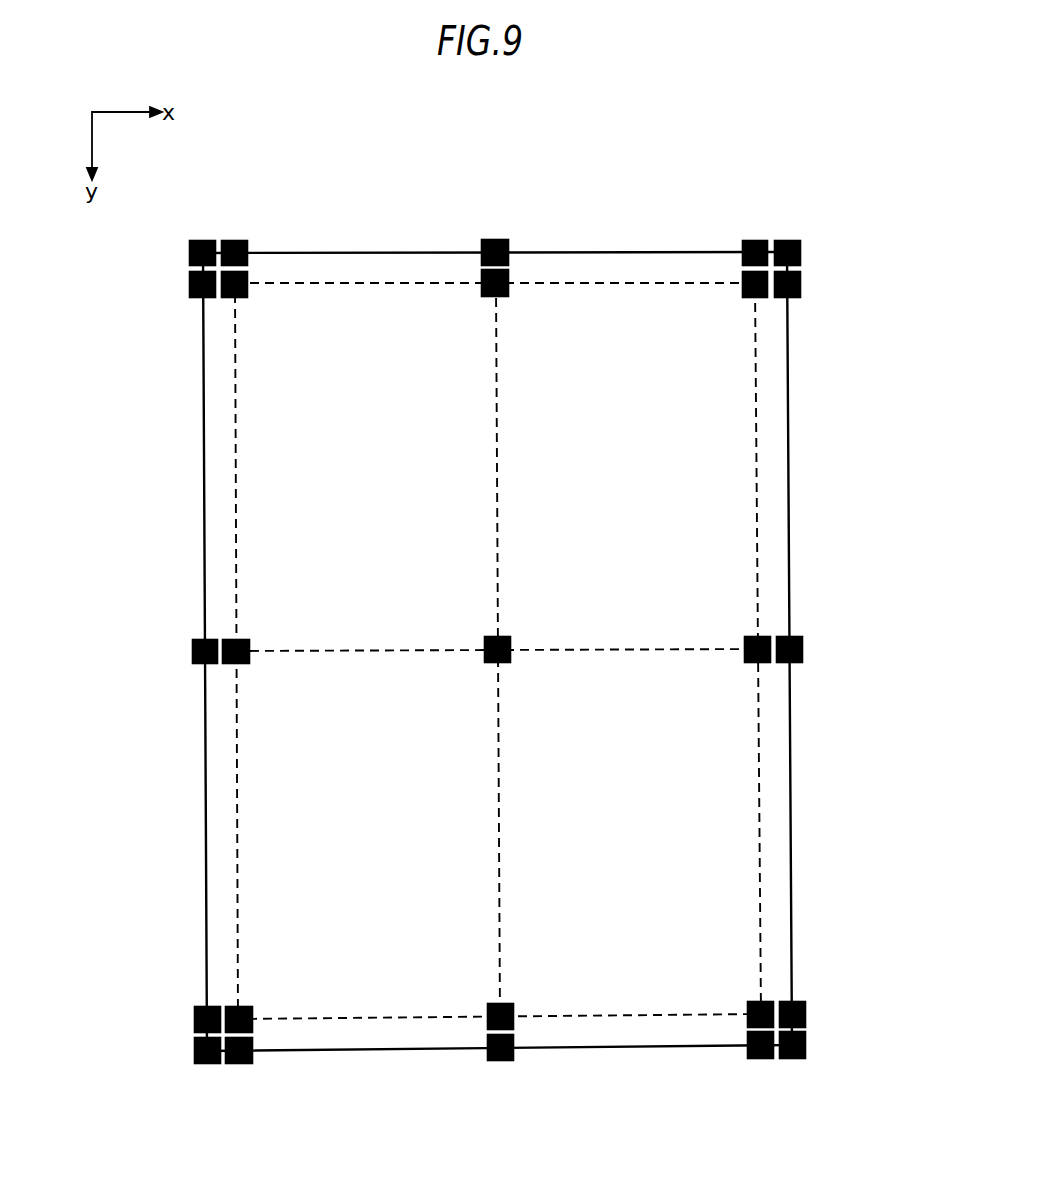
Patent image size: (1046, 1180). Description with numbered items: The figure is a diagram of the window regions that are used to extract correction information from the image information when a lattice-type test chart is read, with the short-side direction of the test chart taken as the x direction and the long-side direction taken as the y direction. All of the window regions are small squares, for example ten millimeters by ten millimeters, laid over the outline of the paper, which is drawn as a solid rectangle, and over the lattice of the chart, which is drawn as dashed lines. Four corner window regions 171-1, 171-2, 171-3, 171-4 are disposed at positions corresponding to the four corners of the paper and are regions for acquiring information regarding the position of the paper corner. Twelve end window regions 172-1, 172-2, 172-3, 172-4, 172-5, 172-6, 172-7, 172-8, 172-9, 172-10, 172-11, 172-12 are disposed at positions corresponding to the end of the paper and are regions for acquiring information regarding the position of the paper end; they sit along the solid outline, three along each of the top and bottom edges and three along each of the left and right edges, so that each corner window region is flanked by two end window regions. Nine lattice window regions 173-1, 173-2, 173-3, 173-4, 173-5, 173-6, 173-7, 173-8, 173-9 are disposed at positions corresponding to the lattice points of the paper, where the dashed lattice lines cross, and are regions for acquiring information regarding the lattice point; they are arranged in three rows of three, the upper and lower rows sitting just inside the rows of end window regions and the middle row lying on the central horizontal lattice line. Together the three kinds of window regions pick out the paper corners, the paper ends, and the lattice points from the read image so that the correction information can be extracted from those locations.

The window region 171-1 is at (200, 240).
The window region 171-2 is at (801, 250).
The window region 171-3 is at (198, 1063).
The window region 171-4 is at (797, 1058).
The window region 172-1 is at (240, 240).
The window region 172-2 is at (497, 239).
The window region 172-3 is at (750, 240).
The window region 172-4 is at (189, 287).
The window region 172-5 is at (801, 287).
The window region 172-6 is at (198, 640).
The window region 172-7 is at (803, 643).
The window region 172-8 is at (195, 1020).
The window region 172-9 is at (797, 1003).
The window region 172-10 is at (238, 1063).
The window region 172-11 is at (500, 1060).
The window region 172-12 is at (750, 1058).
The window region 173-1 is at (248, 296).
The window region 173-2 is at (509, 294).
The window region 173-3 is at (743, 293).
The window region 173-4 is at (243, 640).
The window region 173-5 is at (503, 637).
The window region 173-6 is at (745, 640).
The window region 173-7 is at (250, 1007).
The window region 173-8 is at (512, 1004).
The window region 173-9 is at (753, 1003).